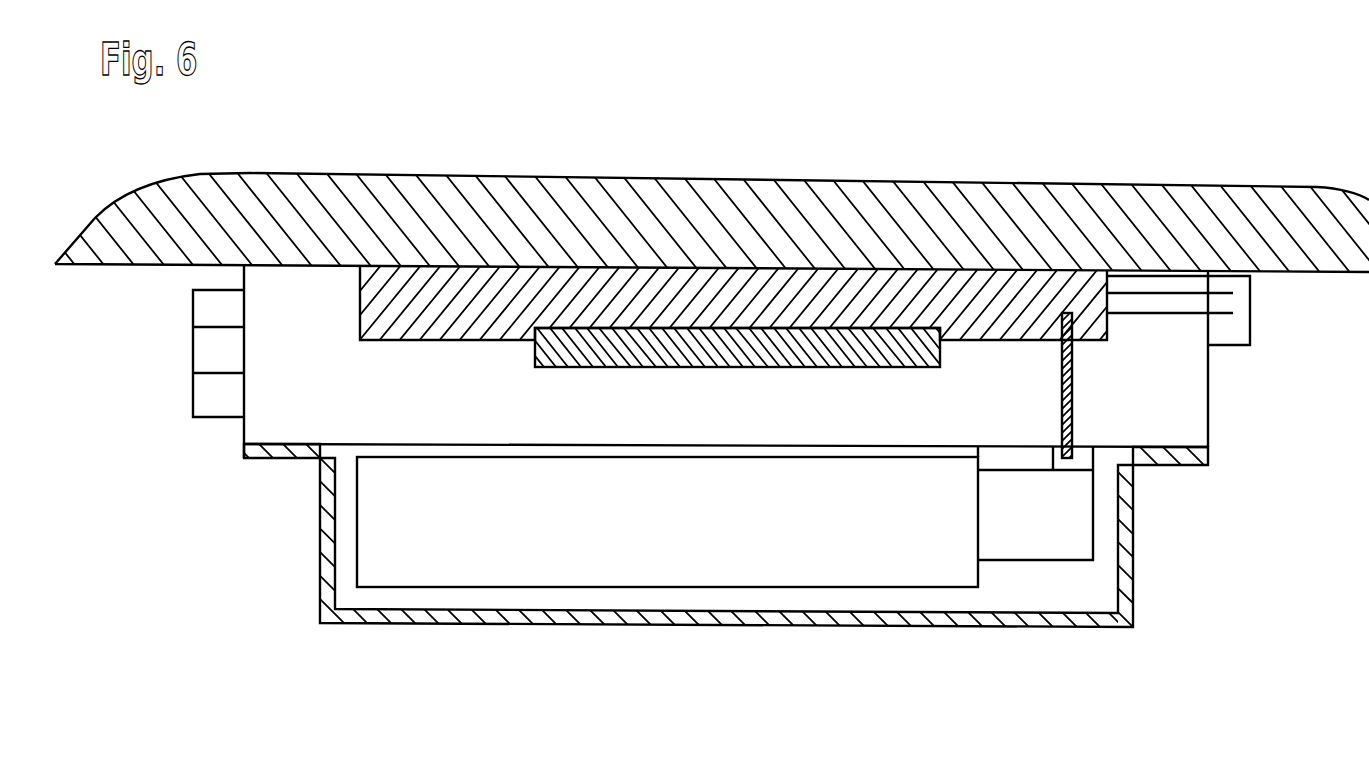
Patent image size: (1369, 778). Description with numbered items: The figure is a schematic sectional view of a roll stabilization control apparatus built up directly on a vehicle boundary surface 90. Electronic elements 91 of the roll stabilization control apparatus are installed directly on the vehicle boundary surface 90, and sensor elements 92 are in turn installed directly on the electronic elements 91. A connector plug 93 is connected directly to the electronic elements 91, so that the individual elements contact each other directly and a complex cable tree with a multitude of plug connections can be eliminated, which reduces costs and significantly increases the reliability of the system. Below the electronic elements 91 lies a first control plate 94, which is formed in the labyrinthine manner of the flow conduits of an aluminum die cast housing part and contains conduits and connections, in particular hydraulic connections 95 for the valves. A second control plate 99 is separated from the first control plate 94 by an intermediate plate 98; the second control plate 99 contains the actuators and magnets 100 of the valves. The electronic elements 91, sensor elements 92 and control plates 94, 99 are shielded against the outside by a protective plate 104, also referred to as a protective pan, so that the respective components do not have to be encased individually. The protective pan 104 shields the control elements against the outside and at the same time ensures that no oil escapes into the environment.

The vehicle boundary surface 90 is at (703, 215).
The electronic elements 91 is at (842, 303).
The sensor elements 92 is at (593, 352).
The connector plug 93 is at (1237, 307).
The first control plate 94 is at (297, 370).
The hydraulic connections 95 is at (223, 348).
The intermediate plate 98 is at (738, 445).
The second control plate 99 is at (567, 547).
The actuators and magnets 100 is at (1038, 550).
The protective plate 104 is at (402, 623).